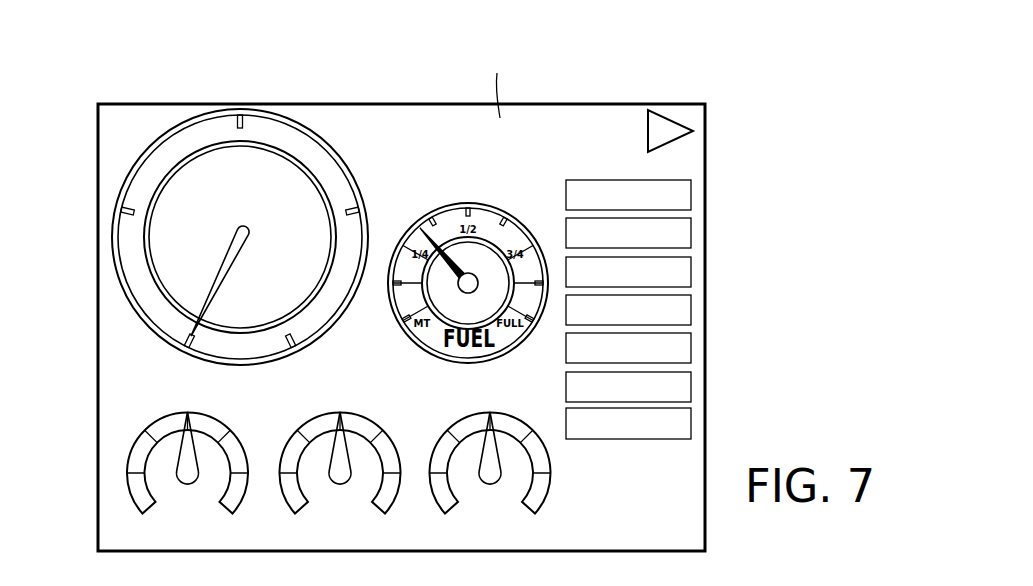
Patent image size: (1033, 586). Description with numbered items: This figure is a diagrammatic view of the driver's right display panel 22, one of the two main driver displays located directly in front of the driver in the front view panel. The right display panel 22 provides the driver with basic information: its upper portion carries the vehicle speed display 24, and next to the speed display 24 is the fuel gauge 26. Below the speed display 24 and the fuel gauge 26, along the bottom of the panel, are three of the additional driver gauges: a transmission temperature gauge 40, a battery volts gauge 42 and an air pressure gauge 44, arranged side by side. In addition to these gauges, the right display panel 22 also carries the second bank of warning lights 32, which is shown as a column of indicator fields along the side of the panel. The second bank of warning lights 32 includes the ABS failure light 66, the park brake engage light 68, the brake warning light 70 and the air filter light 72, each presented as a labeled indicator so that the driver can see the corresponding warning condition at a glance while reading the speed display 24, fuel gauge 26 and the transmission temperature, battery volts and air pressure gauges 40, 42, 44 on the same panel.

The right display panel 22 is at (593, 92).
The vehicle speed display 24 is at (153, 167).
The fuel gauge 26 is at (363, 103).
The second bank of warning lights 32 is at (148, 88).
The transmission temperature gauge 40 is at (172, 422).
The battery volts gauge 42 is at (325, 422).
The air pressure gauge 44 is at (475, 423).
The ABS failure light 66 is at (682, 195).
The park brake engage light 68 is at (682, 233).
The brake warning light 70 is at (682, 272).
The air filter light 72 is at (682, 310).